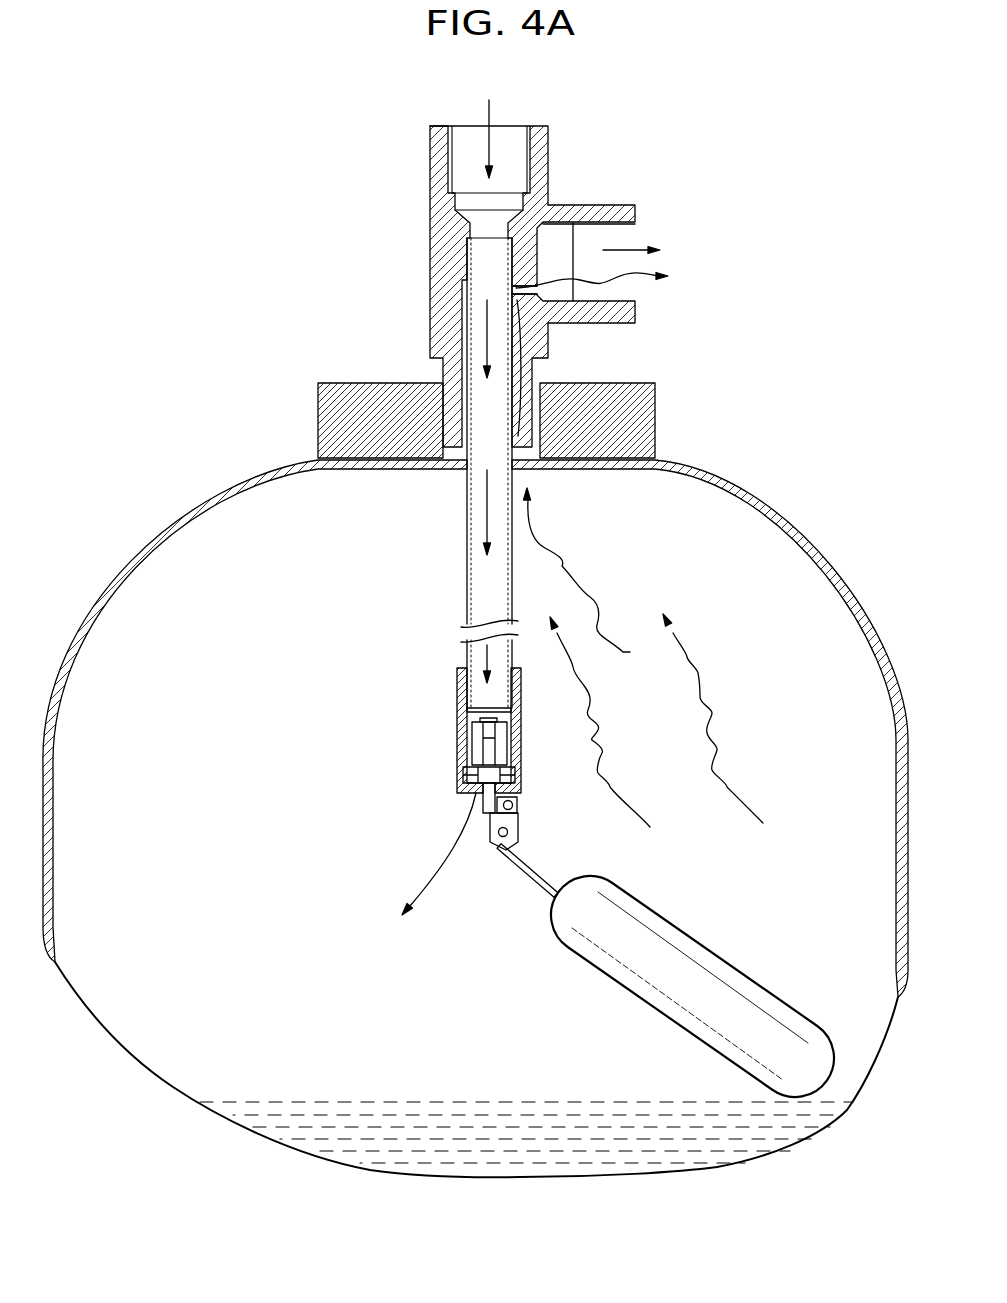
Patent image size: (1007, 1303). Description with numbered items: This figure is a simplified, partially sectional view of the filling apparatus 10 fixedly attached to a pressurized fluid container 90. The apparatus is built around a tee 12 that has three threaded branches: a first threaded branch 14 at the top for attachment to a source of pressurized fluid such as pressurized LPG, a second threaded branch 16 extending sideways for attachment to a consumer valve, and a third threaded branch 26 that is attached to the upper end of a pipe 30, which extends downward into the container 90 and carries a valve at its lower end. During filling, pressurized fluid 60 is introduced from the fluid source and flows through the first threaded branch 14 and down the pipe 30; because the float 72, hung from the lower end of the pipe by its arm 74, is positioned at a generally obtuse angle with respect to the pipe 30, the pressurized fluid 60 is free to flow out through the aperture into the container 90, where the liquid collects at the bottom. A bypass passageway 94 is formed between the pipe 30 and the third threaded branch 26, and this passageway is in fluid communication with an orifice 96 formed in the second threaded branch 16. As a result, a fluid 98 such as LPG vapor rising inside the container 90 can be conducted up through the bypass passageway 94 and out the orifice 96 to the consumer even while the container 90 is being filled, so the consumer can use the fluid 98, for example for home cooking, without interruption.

The filling apparatus 10 is at (405, 157).
The tee 12 is at (442, 280).
The first threaded branch 14 is at (546, 127).
The second threaded branch 16 is at (613, 205).
The third threaded branch 26 is at (518, 392).
The pipe 30 is at (452, 544).
The pressurized fluid 60 is at (489, 117).
The float 72 is at (668, 932).
The float arm 74 is at (534, 874).
The container 90 is at (784, 521).
The bypass passageway 94 is at (518, 436).
The orifice 96 is at (516, 292).
The fluid 98 is at (568, 568).